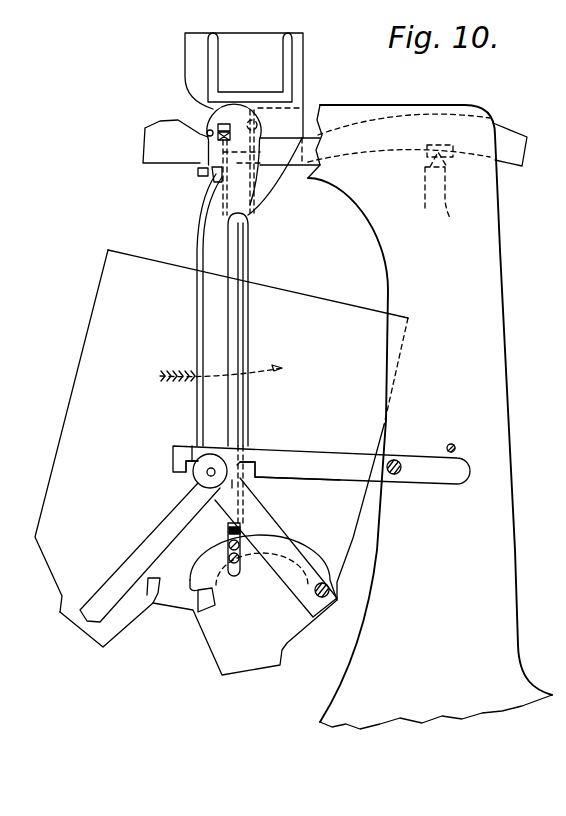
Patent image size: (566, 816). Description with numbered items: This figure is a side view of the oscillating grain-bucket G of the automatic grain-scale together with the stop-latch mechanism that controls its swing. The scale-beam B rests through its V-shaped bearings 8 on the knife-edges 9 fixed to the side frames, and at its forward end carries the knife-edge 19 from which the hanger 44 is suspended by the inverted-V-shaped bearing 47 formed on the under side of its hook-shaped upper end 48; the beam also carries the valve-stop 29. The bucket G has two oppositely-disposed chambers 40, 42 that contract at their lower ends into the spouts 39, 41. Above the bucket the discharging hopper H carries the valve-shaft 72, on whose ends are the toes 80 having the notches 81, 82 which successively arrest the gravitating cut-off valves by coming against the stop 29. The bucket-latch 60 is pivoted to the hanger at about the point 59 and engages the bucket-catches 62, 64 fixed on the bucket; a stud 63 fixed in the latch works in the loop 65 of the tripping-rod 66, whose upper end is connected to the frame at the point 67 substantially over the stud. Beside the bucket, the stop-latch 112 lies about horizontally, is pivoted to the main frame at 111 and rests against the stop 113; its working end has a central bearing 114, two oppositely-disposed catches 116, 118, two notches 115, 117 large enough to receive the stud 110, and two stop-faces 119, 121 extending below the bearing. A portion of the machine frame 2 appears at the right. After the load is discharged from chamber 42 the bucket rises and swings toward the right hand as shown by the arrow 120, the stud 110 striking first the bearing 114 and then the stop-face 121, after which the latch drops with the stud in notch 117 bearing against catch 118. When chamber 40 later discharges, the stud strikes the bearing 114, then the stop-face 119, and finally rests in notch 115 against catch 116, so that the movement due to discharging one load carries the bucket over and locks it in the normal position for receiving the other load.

The machine frame 2 is at (485, 360).
The V-shaped bearings 8 is at (447, 150).
The knife-edges 9 is at (447, 170).
The knife-edge 19 is at (219, 139).
The valve-stop 29 is at (223, 180).
The spout 39 is at (100, 644).
The bucket-chamber 40 is at (88, 370).
The spout 41 is at (265, 665).
The bucket-chamber 42 is at (332, 322).
The hanger 44 is at (210, 313).
The inverted-V-shaped bearing 47 is at (227, 126).
The hook-shaped upper end 48 is at (240, 114).
The pivot point 59 is at (329, 594).
The bucket-latch 60 is at (303, 558).
The bucket-catch 62 is at (153, 603).
The stud 63 is at (228, 553).
The bucket-catch 64 is at (212, 605).
The loops 65 is at (238, 568).
The tripping-rod 66 is at (244, 346).
The connection point 67 is at (258, 124).
The valve-shaft 72 is at (205, 136).
The toes 80 is at (216, 137).
The first notch 81 is at (214, 180).
The second notch 82 is at (199, 174).
The stud 110 is at (207, 474).
The pivot 111 is at (397, 474).
The stop-latch 112 is at (343, 462).
The stop 113 is at (456, 449).
The central bearing 114 is at (232, 480).
The notch 115 is at (193, 458).
The catch 116 is at (209, 468).
The notch 117 is at (252, 464).
The catch 118 is at (248, 472).
The stop-face 119 is at (188, 466).
The arrow 120 is at (217, 364).
The stop-face 121 is at (258, 468).
The scale-beam B is at (498, 141).
The grain-bucket G is at (244, 348).
The discharging hopper H is at (198, 223).